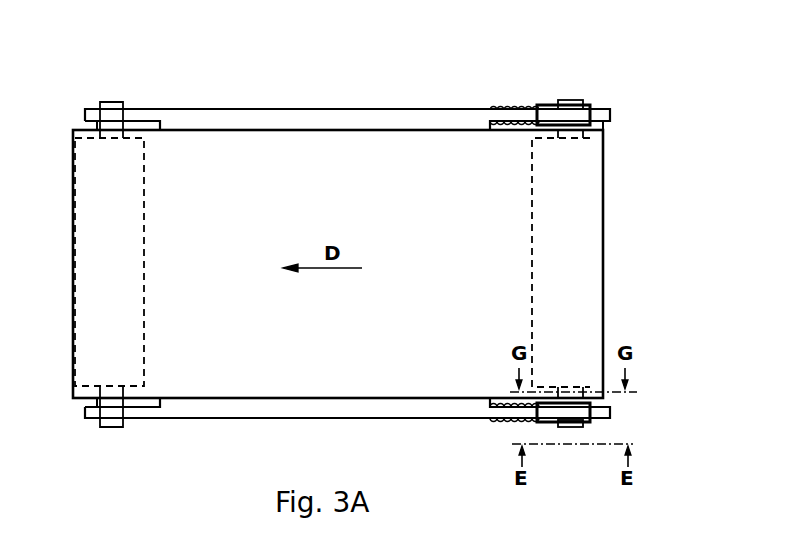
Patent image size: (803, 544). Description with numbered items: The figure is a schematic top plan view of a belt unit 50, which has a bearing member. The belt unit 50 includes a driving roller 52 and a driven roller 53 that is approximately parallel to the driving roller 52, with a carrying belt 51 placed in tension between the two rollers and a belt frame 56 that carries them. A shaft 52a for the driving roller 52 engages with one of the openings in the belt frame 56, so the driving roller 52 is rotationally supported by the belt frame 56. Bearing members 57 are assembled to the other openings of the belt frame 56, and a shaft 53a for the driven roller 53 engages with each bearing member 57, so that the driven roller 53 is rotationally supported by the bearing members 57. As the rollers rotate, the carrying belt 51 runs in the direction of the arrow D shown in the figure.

The belt unit 50 is at (364, 78).
The carrying belt 51 is at (358, 398).
The driving roller 52 is at (144, 289).
The shaft 52a is at (99, 427).
The driven roller 53 is at (532, 290).
The shaft 53a is at (565, 100).
The belt frame 56 is at (232, 418).
The bearing member 57 is at (589, 104).